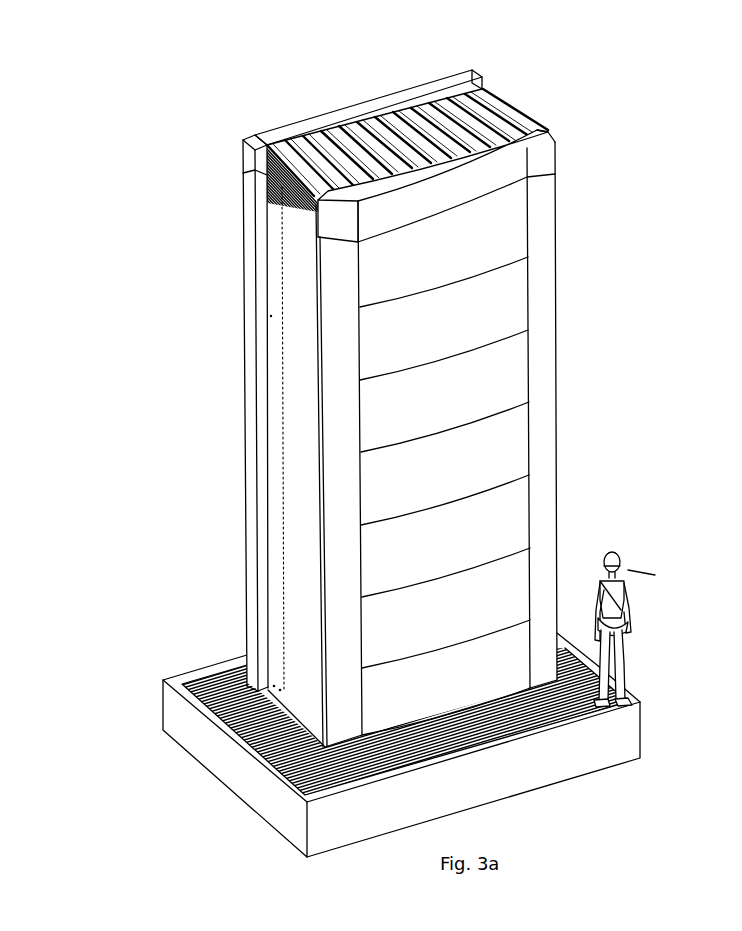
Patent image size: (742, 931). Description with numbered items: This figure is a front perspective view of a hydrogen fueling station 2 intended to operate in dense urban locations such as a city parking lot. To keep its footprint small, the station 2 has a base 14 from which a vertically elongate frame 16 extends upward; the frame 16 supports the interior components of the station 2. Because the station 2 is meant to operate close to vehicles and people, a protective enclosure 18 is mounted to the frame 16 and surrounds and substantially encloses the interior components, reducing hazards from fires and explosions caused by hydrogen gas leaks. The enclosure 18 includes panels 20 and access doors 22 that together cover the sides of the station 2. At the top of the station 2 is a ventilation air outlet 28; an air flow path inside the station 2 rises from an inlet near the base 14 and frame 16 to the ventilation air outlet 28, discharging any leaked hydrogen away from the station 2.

The station 2 is at (374, 398).
The base 14 is at (622, 737).
The vertically elongate frame 16 is at (300, 390).
The protective enclosure 18 is at (364, 405).
The panels 20 is at (515, 315).
The access doors 22 is at (493, 448).
The ventilation air outlet 28 is at (348, 120).